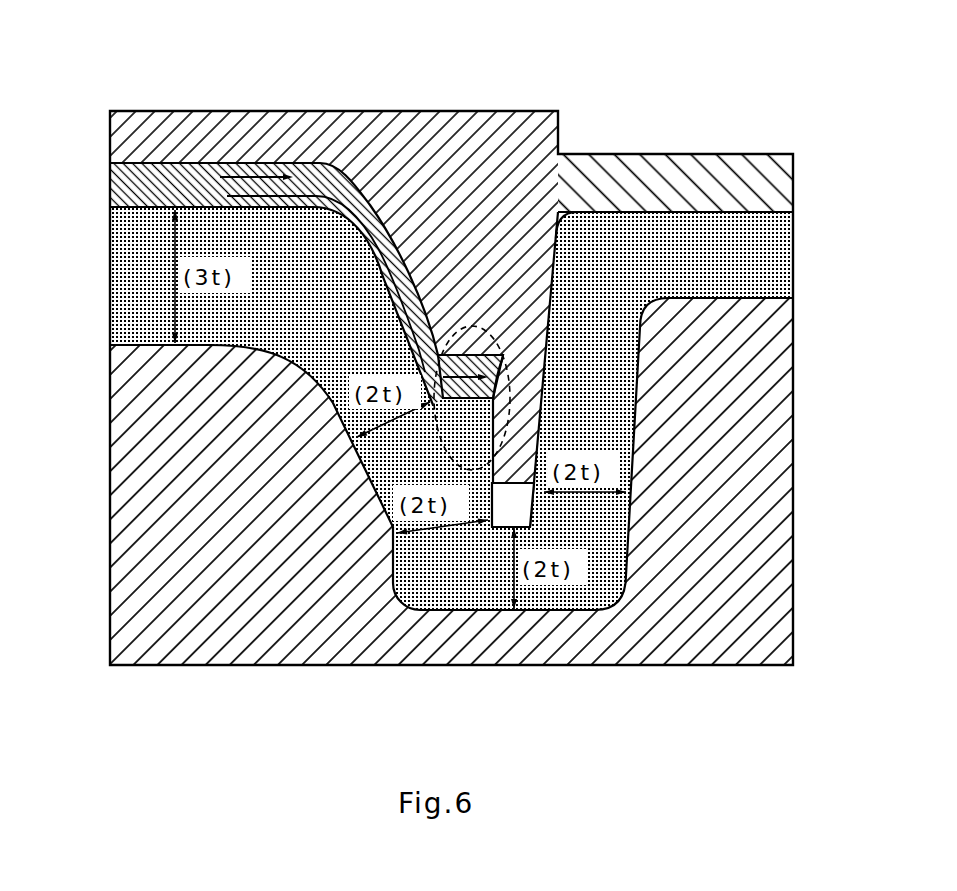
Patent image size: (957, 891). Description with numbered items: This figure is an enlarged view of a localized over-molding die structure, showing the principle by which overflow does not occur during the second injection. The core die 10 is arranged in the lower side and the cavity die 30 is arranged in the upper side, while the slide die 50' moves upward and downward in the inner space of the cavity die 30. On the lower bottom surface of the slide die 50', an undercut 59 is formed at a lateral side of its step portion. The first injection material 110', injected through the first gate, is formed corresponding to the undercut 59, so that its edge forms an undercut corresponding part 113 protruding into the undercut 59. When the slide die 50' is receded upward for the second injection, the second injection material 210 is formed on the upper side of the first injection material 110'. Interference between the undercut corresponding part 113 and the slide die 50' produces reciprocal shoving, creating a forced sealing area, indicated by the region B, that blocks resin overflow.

The core die 10 is at (785, 484).
The cavity die 30 is at (691, 167).
The slide die 50' is at (334, 286).
The undercut 59 is at (508, 372).
The first injection material 110' is at (499, 408).
The undercut corresponding part 113 is at (450, 352).
The second injection material 210 is at (120, 184).
The enlarged region B is at (472, 325).